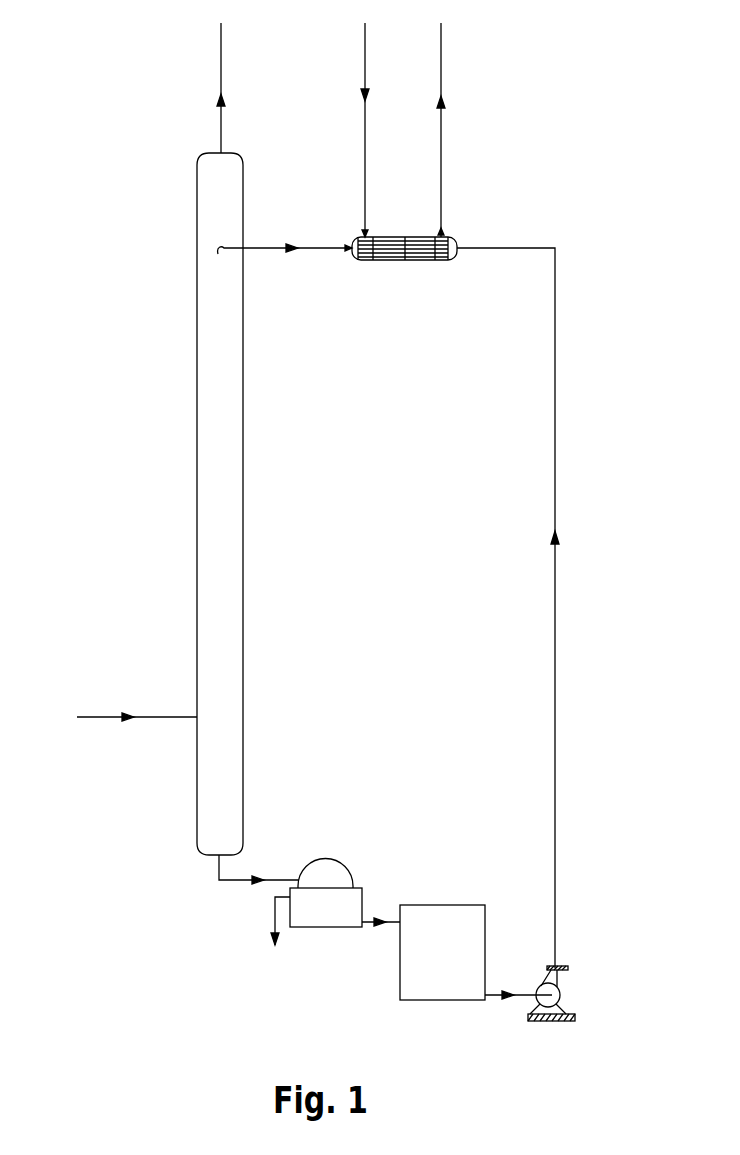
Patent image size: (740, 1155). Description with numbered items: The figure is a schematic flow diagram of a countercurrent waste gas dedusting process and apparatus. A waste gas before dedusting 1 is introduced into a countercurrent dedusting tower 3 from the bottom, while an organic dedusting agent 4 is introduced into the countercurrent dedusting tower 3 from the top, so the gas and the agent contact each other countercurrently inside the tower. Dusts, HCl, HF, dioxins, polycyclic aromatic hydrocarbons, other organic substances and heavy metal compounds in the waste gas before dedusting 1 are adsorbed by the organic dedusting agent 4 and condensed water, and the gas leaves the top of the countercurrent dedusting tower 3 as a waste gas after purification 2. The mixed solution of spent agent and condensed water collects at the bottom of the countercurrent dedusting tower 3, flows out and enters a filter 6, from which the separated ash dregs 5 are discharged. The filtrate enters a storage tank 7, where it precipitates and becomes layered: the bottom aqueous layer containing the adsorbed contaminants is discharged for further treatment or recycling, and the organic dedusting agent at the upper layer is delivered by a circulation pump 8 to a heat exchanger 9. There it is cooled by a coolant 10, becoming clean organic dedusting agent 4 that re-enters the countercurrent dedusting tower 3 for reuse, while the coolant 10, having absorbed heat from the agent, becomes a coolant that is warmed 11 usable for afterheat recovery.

The waste gas before dedusting 1 is at (137, 693).
The waste gas after purification 2 is at (211, 84).
The countercurrent dedusting tower 3 is at (233, 538).
The organic dedusting agent 4 is at (285, 227).
The ash dregs 5 is at (269, 926).
The filter 6 is at (330, 863).
The storage tank 7 is at (442, 907).
The circulation pump 8 is at (560, 968).
The heat exchanger 9 is at (455, 240).
The coolant 10 is at (350, 126).
The coolant that is warmed 11 is at (459, 126).